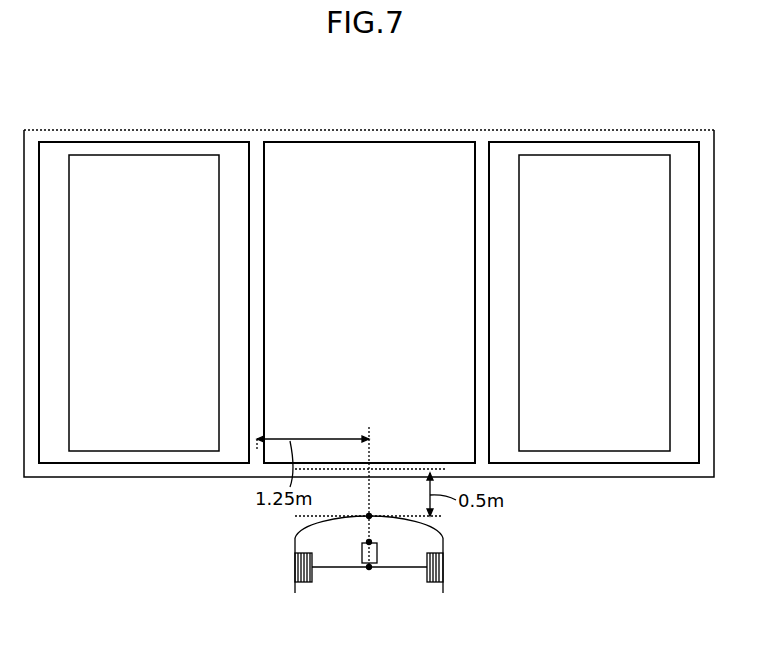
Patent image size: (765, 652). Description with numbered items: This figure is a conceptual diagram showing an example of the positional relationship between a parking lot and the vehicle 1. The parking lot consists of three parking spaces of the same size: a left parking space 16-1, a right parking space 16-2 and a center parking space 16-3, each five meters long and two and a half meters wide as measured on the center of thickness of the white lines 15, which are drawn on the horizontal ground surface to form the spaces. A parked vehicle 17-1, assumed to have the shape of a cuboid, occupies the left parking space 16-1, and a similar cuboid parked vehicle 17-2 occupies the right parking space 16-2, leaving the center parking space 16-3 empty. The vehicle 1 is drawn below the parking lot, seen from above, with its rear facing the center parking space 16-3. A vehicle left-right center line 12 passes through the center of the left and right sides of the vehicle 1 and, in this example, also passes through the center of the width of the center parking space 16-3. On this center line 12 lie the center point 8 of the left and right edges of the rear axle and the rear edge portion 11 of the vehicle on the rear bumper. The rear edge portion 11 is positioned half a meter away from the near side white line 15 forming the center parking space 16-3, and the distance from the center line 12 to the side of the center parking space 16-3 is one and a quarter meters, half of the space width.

The vehicle 1 is at (427, 538).
The center point of the rear axle 8 is at (372, 568).
The rear edge portion of the vehicle 11 is at (365, 518).
The vehicle left-right center line 12 is at (370, 570).
The white lines 15 is at (255, 138).
The left parking space 16-1 is at (57, 157).
The right parking space 16-2 is at (503, 152).
The center parking space 16-3 is at (365, 153).
The vehicle parked in the left parking space 17-1 is at (142, 175).
The vehicle parked in the right parking space 17-2 is at (593, 172).